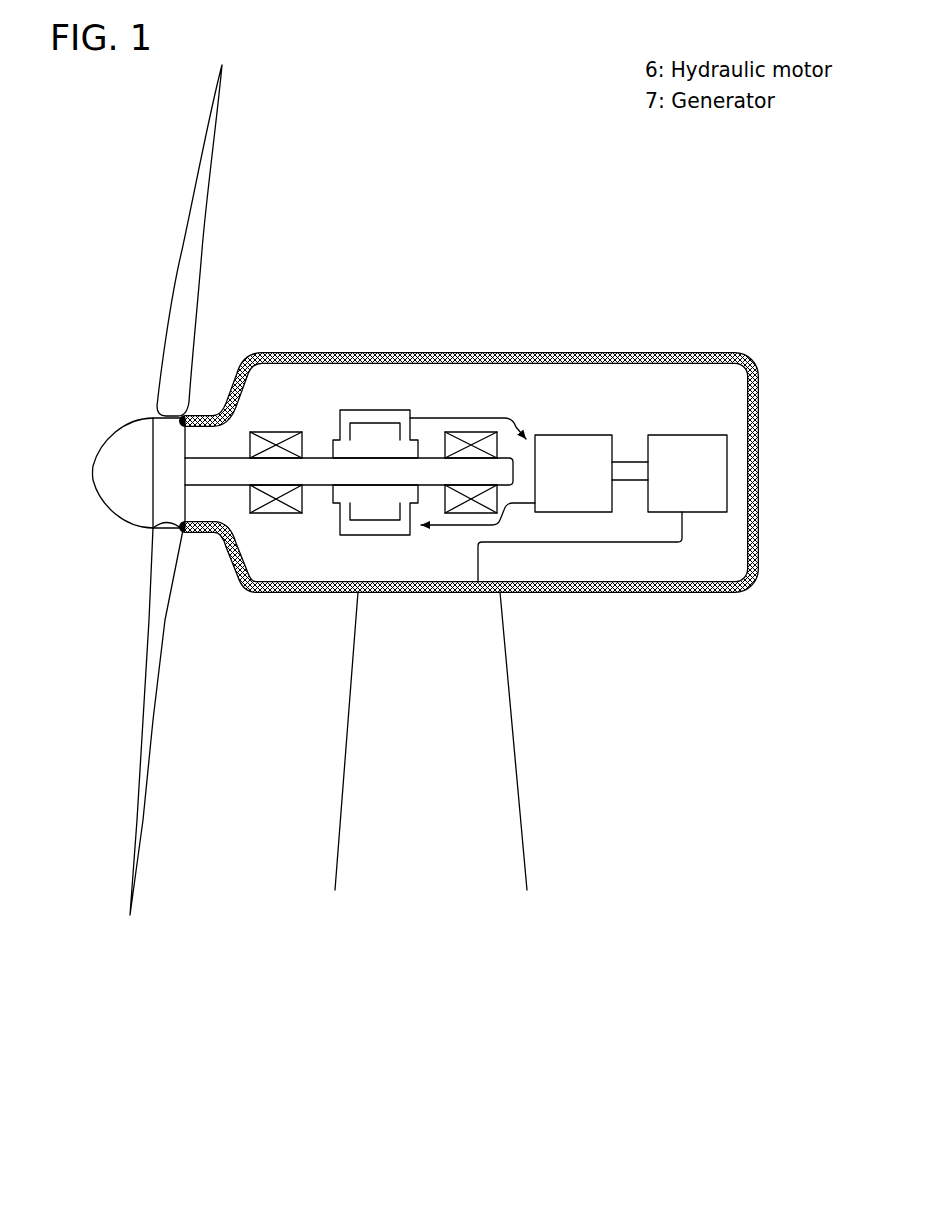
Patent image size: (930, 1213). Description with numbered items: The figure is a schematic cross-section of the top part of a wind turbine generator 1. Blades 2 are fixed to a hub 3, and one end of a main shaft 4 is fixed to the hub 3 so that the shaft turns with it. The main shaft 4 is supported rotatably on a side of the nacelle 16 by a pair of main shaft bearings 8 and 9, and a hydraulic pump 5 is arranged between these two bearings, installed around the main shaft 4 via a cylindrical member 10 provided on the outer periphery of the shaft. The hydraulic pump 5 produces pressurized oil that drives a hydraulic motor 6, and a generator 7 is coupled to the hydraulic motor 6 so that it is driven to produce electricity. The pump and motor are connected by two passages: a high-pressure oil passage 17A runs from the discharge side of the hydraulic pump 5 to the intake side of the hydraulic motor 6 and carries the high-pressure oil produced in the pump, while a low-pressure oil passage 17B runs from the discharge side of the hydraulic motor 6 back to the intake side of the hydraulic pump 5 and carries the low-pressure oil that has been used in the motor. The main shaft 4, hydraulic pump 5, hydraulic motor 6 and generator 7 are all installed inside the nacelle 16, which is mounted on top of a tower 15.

The wind turbine generator 1 is at (505, 290).
The blades 2 is at (187, 248).
The hub 3 is at (118, 459).
The main shaft 4 is at (318, 476).
The hydraulic pump 5 is at (347, 410).
The hydraulic motor 6 is at (574, 435).
The generator 7 is at (685, 435).
The main shaft bearing 8 is at (278, 432).
The main shaft bearing 9 is at (477, 432).
The cylindrical member 10 is at (378, 426).
The tower 15 is at (522, 765).
The nacelle 16 is at (606, 356).
The high-pressure oil passage 17A is at (457, 418).
The low-pressure oil passage 17B is at (455, 527).